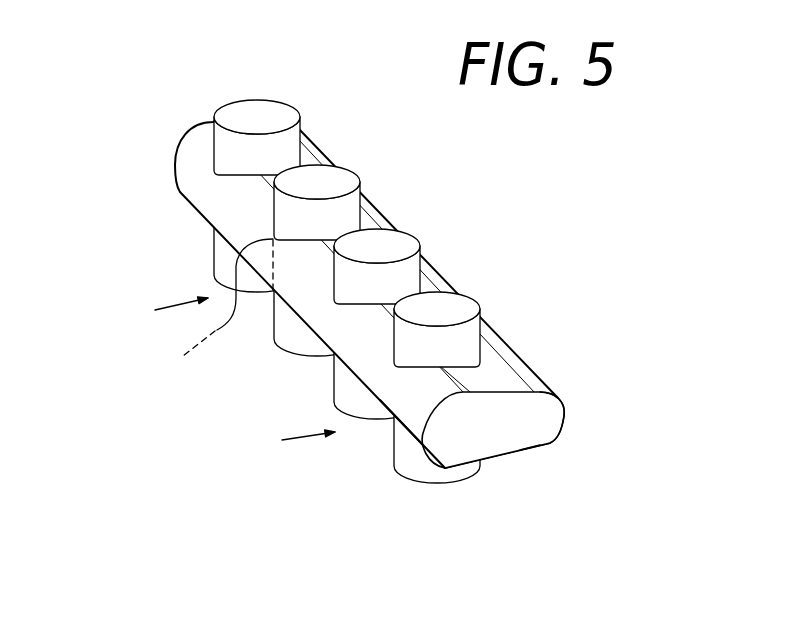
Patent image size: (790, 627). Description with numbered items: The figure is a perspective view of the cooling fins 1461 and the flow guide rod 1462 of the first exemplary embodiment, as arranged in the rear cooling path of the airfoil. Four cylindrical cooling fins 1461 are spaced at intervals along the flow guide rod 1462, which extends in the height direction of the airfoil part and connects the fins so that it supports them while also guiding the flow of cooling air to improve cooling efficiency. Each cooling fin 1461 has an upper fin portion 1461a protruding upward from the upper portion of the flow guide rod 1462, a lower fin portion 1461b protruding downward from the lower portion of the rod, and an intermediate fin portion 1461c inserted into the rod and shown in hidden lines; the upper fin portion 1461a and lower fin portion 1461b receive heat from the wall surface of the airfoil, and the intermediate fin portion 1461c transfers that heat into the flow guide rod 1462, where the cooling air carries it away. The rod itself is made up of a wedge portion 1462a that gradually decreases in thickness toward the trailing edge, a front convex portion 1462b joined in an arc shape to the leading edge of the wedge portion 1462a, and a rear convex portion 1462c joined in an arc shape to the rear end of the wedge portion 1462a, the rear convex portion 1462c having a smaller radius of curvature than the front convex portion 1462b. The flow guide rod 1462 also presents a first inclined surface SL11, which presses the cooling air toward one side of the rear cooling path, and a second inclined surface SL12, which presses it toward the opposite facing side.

The cooling fin 1461 is at (277, 105).
The upper fin portion 1461a is at (276, 221).
The lower fin portion 1461b is at (283, 333).
The intermediate fin portion 1461c is at (253, 367).
The flow guide rod 1462 is at (368, 410).
The wedge portion 1462a is at (508, 443).
The front convex portion 1462b is at (433, 413).
The rear convex portion 1462c is at (562, 428).
The first inclined surface SL11 is at (497, 380).
The second inclined surface SL12 is at (540, 450).